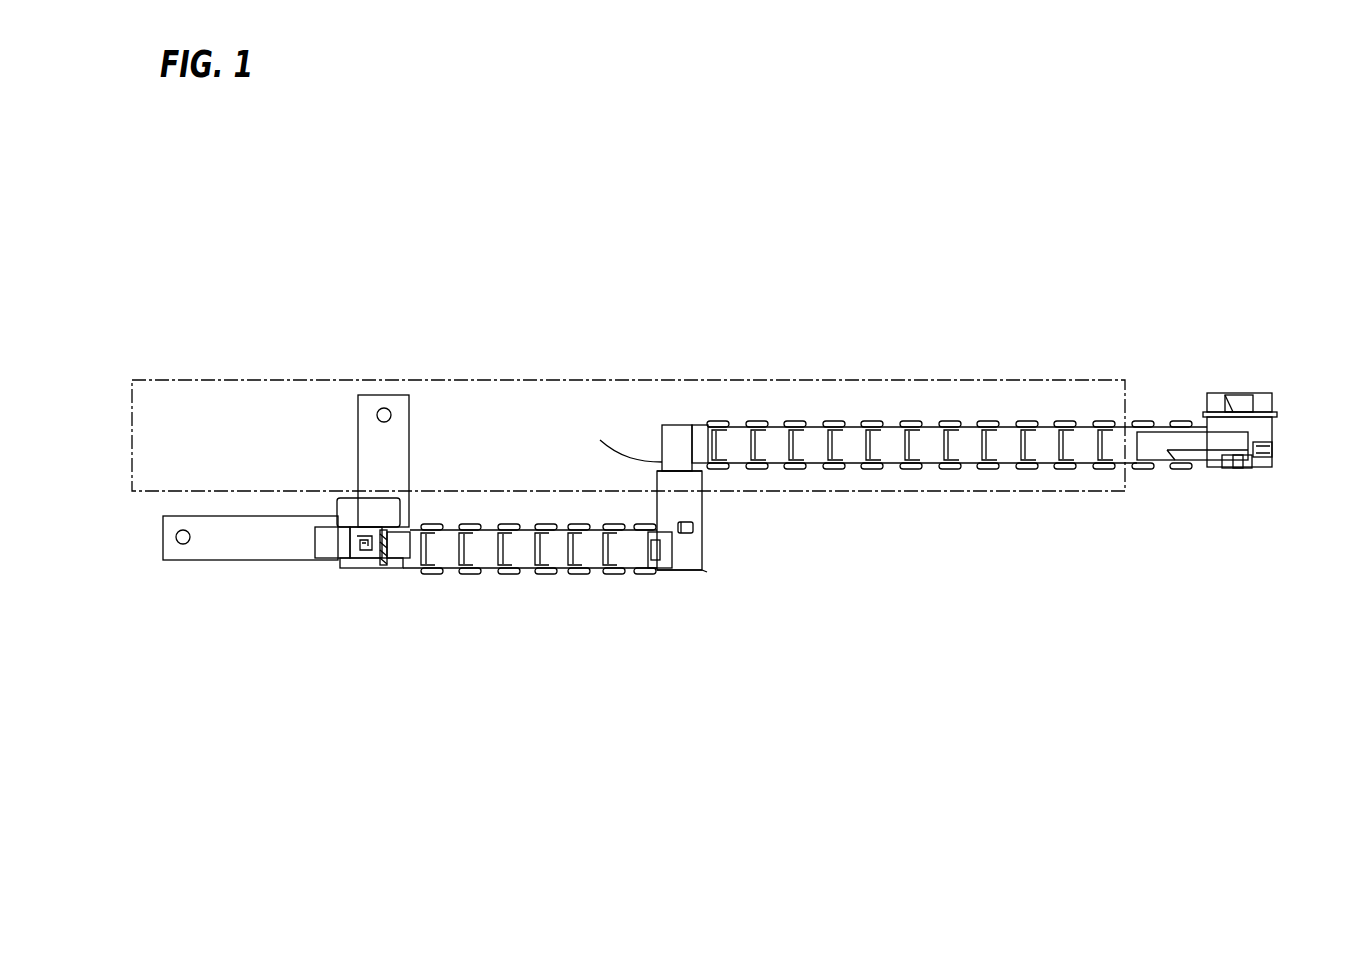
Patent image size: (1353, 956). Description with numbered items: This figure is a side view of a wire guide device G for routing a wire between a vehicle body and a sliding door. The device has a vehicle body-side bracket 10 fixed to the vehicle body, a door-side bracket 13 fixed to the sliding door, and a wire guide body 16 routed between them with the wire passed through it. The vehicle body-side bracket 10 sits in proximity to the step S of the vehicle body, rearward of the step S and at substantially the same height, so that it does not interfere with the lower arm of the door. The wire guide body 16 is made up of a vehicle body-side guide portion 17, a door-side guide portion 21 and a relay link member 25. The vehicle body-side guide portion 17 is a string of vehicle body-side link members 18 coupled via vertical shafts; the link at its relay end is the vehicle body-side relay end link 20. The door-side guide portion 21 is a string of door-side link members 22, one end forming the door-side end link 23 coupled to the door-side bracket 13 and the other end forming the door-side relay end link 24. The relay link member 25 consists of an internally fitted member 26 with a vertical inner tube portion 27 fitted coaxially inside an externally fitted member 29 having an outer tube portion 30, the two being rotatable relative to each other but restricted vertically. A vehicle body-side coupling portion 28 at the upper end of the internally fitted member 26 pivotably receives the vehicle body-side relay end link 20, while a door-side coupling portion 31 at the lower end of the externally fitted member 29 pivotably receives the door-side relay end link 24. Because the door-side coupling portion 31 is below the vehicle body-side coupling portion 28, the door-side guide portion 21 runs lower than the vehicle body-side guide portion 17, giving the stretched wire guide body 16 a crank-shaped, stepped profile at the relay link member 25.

The wire guide device G is at (1175, 268).
The step S is at (503, 378).
The vehicle body-side bracket 10 is at (1244, 425).
The door-side bracket 13 is at (350, 498).
The wire guide body 16 is at (957, 415).
The vehicle body-side guide portion 17 is at (957, 434).
The vehicle body-side link members 18 is at (853, 448).
The vehicle body-side relay end link 20 is at (740, 440).
The door-side guide portion 21 is at (537, 610).
The door-side link members 22 is at (528, 555).
The door-side end link 23 is at (408, 555).
The door-side relay end link 24 is at (640, 548).
The relay link member 25 is at (635, 427).
The internally fitted member 26 is at (673, 435).
The inner tube portion 27 is at (600, 440).
The vehicle body-side coupling portion 28 is at (703, 435).
The externally fitted member 29 is at (700, 570).
The outer tube portion 30 is at (724, 566).
The door-side coupling portion 31 is at (665, 545).